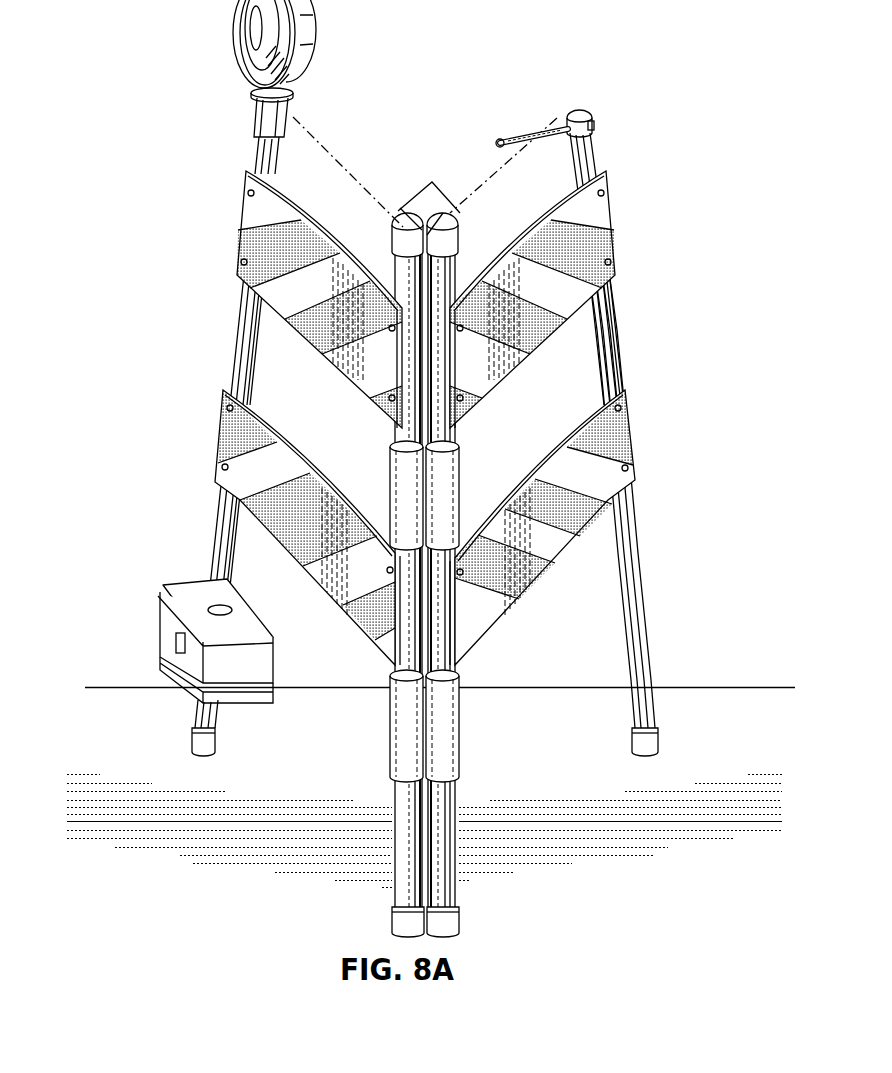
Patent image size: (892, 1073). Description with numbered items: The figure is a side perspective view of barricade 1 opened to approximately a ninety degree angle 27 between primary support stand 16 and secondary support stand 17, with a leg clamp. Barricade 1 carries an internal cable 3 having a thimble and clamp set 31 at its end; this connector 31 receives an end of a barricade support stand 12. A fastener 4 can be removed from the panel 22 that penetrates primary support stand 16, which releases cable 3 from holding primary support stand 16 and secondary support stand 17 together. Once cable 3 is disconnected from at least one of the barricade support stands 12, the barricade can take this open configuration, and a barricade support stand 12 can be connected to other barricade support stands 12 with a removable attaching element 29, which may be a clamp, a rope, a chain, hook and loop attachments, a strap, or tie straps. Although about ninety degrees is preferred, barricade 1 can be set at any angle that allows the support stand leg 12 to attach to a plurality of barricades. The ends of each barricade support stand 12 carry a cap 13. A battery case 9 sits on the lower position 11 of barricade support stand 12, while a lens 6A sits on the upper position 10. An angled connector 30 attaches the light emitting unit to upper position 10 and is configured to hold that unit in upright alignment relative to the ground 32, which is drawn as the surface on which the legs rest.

The barricade 1 is at (100, 163).
The internal cable 3 is at (532, 140).
The fastener 4 is at (247, 192).
The lens 6A is at (307, 27).
The battery case 9 is at (240, 617).
The upper position 10 is at (265, 146).
The lower position 11 is at (203, 710).
The barricade support stand 12 is at (222, 540).
The cap 13 is at (592, 118).
The primary support stand 16 is at (250, 166).
The secondary support stand 17 is at (605, 330).
The panel 22 is at (248, 226).
The ninety degree angle 27 is at (430, 178).
The removable attaching element 29 is at (440, 493).
The angled connector 30 is at (258, 104).
The thimble and clamp set 31 is at (500, 139).
The ground 32 is at (710, 688).